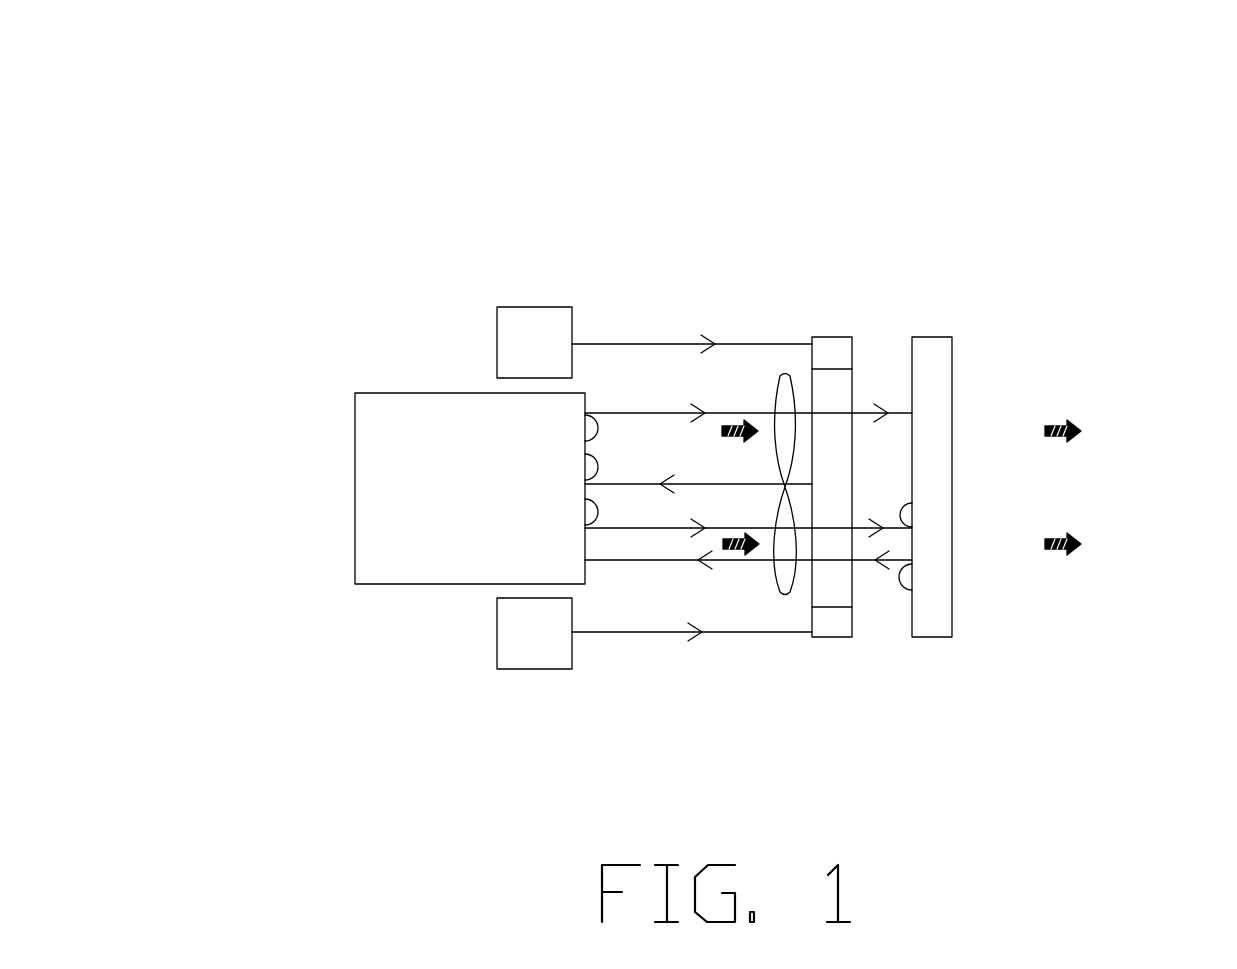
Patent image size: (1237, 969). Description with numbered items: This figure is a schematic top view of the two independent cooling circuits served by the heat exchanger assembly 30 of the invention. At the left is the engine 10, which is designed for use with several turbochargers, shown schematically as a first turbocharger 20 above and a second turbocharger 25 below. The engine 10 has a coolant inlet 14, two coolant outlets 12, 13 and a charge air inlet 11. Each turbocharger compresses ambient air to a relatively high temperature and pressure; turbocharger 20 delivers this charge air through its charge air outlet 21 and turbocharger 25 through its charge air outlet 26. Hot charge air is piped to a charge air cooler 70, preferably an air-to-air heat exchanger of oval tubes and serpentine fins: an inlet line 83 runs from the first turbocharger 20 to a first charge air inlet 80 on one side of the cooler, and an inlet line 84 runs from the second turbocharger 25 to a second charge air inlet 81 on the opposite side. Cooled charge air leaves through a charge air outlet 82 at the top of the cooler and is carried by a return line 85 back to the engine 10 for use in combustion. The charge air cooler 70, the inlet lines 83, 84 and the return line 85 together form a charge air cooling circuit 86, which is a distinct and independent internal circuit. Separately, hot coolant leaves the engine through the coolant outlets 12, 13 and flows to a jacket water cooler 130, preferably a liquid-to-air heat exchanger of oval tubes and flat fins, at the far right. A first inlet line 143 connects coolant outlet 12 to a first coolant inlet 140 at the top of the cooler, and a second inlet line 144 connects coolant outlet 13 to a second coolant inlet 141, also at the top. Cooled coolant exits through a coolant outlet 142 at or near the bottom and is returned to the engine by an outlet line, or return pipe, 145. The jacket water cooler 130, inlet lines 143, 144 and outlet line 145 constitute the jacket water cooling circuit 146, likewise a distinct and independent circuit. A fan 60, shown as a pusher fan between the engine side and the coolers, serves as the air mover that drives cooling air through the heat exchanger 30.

The engine 10 is at (393, 358).
The charge air inlet 11 is at (584, 454).
The coolant outlet 12 is at (584, 441).
The coolant outlet 13 is at (584, 499).
The coolant inlet 14 is at (585, 562).
The turbocharger 20 is at (525, 273).
The charge air outlet 21 is at (573, 341).
The turbocharger 25 is at (510, 702).
The charge air outlet 26 is at (574, 637).
The heat exchanger assembly 30 is at (989, 127).
The fan 60 is at (777, 340).
The charge air cooler 70 is at (840, 302).
The first charge air inlet 80 is at (809, 347).
The second charge air inlet 81 is at (803, 633).
The charge air outlet 82 is at (812, 483).
The inlet line 83 is at (738, 344).
The inlet line 84 is at (782, 633).
The return line 85 is at (737, 482).
The charge air cooling circuit 86 is at (650, 344).
The jacket water cooler 130 is at (986, 380).
The coolant inlet 140 is at (910, 413).
The coolant inlet 141 is at (912, 503).
The coolant outlet 142 is at (912, 588).
The first inlet line 143 is at (865, 413).
The second inlet line 144 is at (912, 505).
The outlet line 145 is at (868, 560).
The jacket water cooling circuit 146 is at (829, 560).